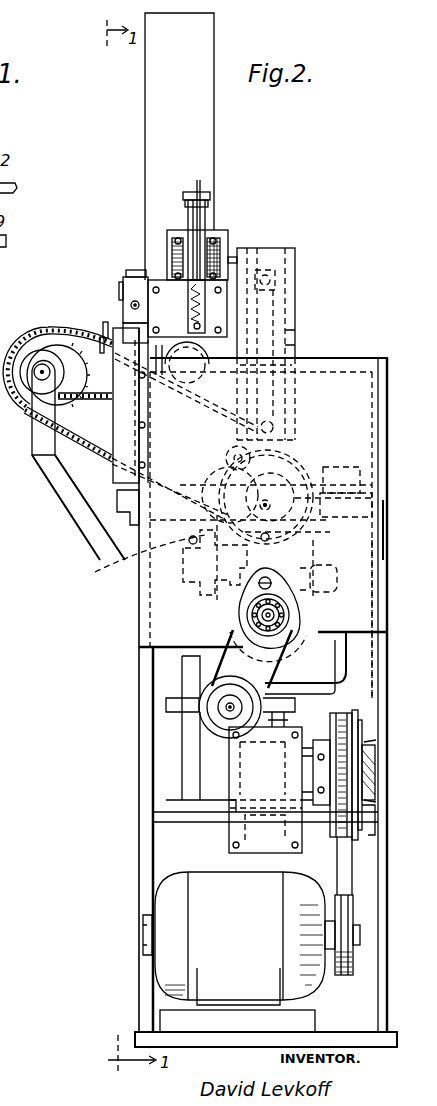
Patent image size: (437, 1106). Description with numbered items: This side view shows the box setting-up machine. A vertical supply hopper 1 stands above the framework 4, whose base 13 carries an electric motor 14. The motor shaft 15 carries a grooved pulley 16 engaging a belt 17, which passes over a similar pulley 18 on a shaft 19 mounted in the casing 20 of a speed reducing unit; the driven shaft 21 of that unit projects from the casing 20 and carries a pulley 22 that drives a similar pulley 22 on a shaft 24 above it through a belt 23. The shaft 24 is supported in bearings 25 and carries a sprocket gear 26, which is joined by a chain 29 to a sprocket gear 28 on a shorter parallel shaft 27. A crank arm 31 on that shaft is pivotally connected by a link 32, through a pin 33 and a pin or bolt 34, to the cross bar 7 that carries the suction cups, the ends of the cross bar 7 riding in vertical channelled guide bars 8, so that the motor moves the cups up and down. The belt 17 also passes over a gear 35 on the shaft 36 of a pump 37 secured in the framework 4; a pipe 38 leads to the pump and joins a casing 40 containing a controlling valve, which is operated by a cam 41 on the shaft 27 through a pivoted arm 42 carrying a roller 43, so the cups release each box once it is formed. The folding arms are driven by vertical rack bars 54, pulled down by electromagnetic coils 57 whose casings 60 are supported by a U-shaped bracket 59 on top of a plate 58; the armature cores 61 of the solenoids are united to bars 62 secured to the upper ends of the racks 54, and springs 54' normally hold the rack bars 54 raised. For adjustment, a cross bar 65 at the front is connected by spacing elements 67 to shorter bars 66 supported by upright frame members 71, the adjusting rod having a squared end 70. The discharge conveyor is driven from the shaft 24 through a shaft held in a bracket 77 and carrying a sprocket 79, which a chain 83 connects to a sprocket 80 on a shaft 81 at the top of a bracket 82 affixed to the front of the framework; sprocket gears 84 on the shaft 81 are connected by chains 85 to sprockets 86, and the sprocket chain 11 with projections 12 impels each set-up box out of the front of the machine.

The vertical supply hopper 1 is at (160, 133).
The framework 4 is at (345, 372).
The cross bar 7 is at (290, 242).
The vertical channelled guide bars 8 is at (296, 298).
The sprocket chain 11 is at (100, 343).
The projections 12 is at (105, 322).
The base 13 is at (135, 1038).
The electric motor 14 is at (170, 905).
The shaft 15 is at (356, 948).
The grooved pulley 16 is at (350, 905).
The belt 17 is at (341, 848).
The pulley 18 is at (362, 745).
The shaft 19 is at (383, 742).
The casing 20 is at (195, 765).
The driven shaft 21 is at (226, 707).
The pulley 22 is at (222, 648).
The belt 23 is at (205, 680).
The shaft 24 is at (290, 613).
The bearings 25 is at (238, 612).
The sprocket gear 26 is at (312, 645).
The shorter shaft 27 is at (322, 512).
The sprocket gear 28 is at (378, 588).
The chain 29 is at (385, 534).
The crank arm 31 is at (307, 443).
The link 32 is at (297, 337).
The pin 33 is at (298, 412).
The pin or bolt 34 is at (298, 282).
The gear 35 is at (372, 835).
The shaft of the pump 36 is at (312, 778).
The pump 37 is at (245, 812).
The pipe 38 is at (345, 716).
The casing 40 is at (190, 592).
The cam 41 is at (206, 494).
The pivoted arm 42 is at (95, 572).
The roller 43 is at (320, 583).
The rack bar 54 is at (185, 306).
The springs 54' is at (168, 382).
The electromagnetic coils 57 is at (172, 258).
The plate 58 is at (220, 313).
The bracket 59 is at (265, 250).
The frames or casings 60 is at (220, 242).
The armature cores 61 is at (212, 218).
The bars 62 is at (197, 200).
The cross bar 65 is at (128, 277).
The shorter bars 66 is at (125, 335).
The spacing elements 67 is at (123, 282).
The squared end 70 is at (135, 300).
The upright frame members 71 is at (120, 437).
The bracket 77 is at (345, 465).
The sprocket 79 is at (224, 462).
The sprocket 80 is at (30, 412).
The shaft 81 is at (42, 365).
The bracket 82 is at (64, 497).
The chain 83 is at (117, 470).
The sprocket gears 84 is at (25, 360).
The chains 85 is at (85, 397).
The sprockets 86 is at (192, 360).